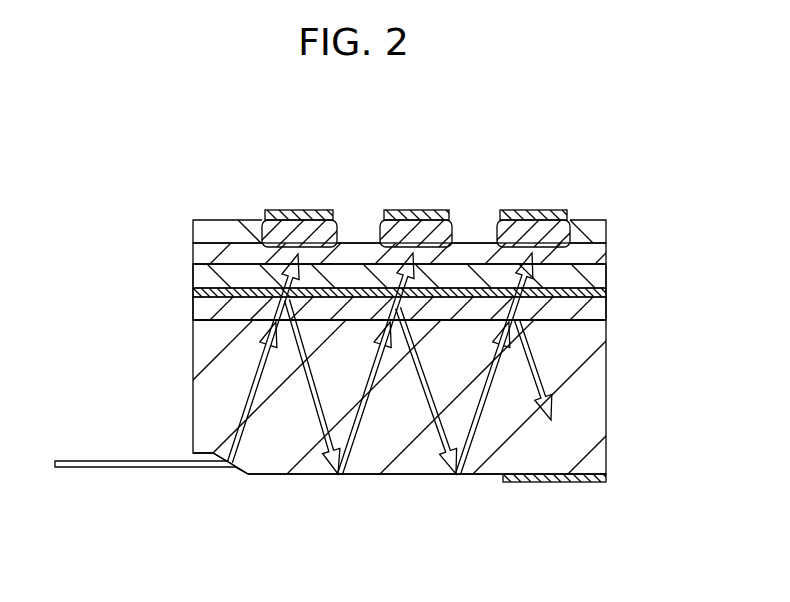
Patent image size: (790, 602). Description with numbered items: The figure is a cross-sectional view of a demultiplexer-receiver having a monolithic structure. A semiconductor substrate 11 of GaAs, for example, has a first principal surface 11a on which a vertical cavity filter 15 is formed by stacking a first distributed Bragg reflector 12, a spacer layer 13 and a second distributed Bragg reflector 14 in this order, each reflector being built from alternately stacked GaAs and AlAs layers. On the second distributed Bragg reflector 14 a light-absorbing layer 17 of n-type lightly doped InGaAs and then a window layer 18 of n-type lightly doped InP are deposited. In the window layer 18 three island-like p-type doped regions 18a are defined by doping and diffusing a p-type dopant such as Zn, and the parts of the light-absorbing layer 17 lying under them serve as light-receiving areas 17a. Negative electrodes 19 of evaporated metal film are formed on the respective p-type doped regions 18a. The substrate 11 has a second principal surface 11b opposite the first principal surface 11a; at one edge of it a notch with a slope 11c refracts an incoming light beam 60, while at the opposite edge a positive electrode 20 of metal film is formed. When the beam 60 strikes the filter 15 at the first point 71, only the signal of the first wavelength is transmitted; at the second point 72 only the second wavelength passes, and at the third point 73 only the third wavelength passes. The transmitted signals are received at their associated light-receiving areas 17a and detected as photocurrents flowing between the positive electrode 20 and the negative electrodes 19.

The semiconductor substrate 11 is at (606, 415).
The first principal surface 11a is at (566, 317).
The second principal surface 11b is at (368, 478).
The slope 11c is at (237, 478).
The first distributed Bragg reflector 12 is at (606, 313).
The spacer layer 13 is at (606, 292).
The second distributed Bragg reflector 14 is at (606, 275).
The vertical cavity filter 15 is at (685, 245).
The light-absorbing layer 17 is at (193, 258).
The light-receiving area 17a is at (400, 226).
The window layer 18 is at (193, 228).
The p-type doped region 18a is at (262, 237).
The negative electrode 19 is at (293, 210).
The positive electrode 20 is at (597, 485).
The incoming light beam 60 is at (128, 460).
The first point 71 is at (297, 304).
The second point 72 is at (405, 300).
The third point 73 is at (513, 320).